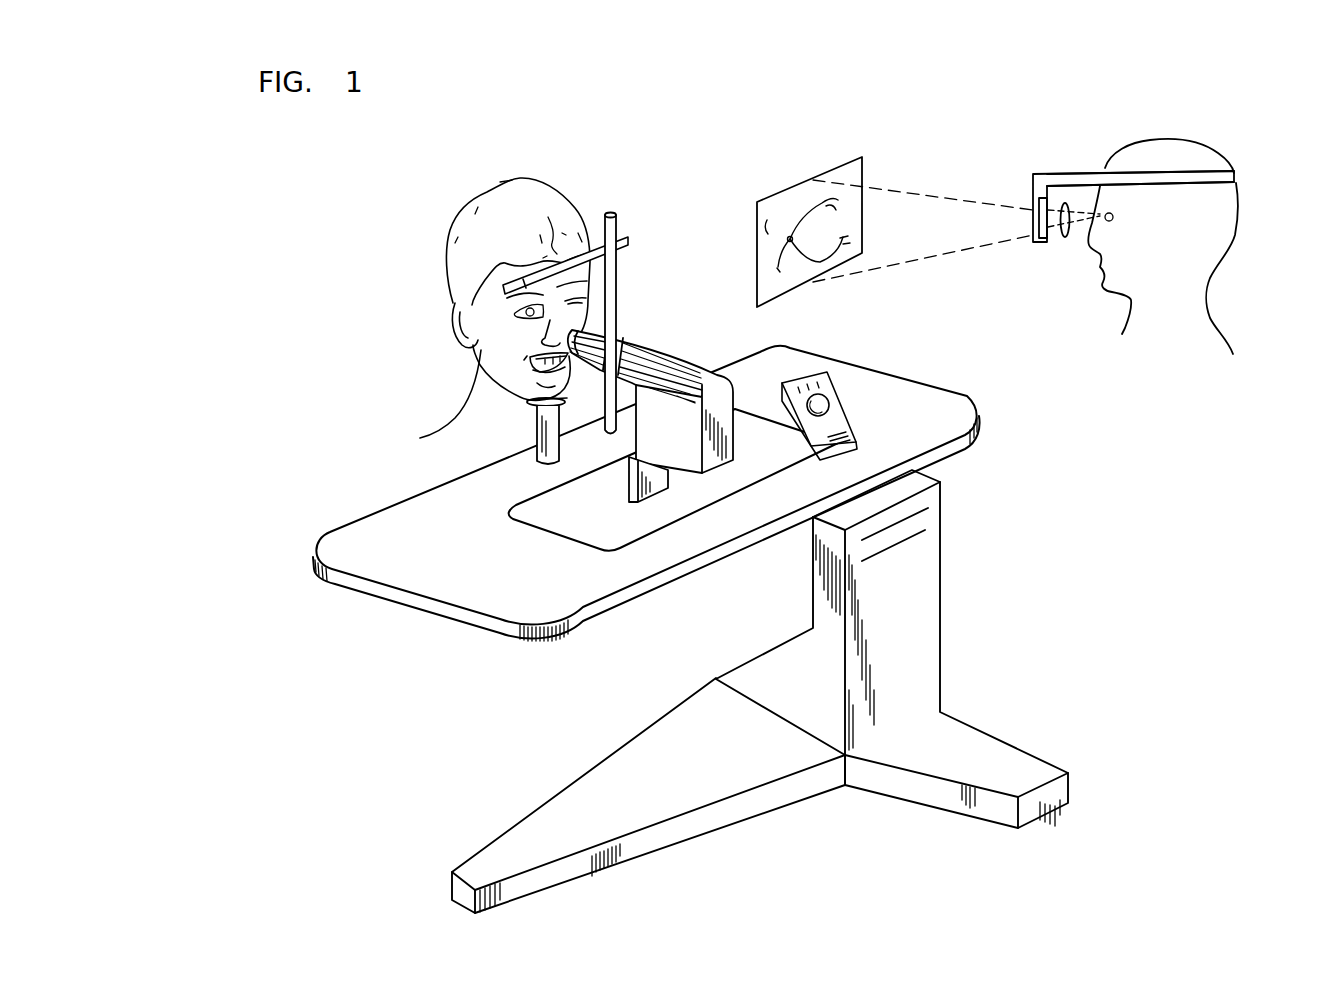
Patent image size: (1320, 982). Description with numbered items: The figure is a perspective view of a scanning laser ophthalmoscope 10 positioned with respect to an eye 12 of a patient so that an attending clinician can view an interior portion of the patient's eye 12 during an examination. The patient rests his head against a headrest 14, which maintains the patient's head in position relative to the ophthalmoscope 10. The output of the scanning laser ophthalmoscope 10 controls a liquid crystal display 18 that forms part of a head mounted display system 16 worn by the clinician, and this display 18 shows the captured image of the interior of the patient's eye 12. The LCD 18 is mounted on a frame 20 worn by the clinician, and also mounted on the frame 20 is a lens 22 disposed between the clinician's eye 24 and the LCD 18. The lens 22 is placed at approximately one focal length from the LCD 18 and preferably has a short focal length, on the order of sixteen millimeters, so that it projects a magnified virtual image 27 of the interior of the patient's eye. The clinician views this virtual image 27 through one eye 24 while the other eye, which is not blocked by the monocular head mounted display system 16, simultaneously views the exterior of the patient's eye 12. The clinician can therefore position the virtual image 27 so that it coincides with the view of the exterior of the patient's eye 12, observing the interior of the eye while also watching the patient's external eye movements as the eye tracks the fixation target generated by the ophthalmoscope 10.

The scanning laser ophthalmoscope 10 is at (673, 343).
The eye of a patient 12 is at (522, 321).
The headrest 14 is at (620, 258).
The head mounted display system 16 is at (1088, 220).
The liquid crystal display (LCD) 18 is at (1045, 252).
The frame 20 is at (1043, 167).
The lens 22 is at (1070, 202).
The clinician's eye 24 is at (1120, 227).
The virtual image 27 is at (840, 155).